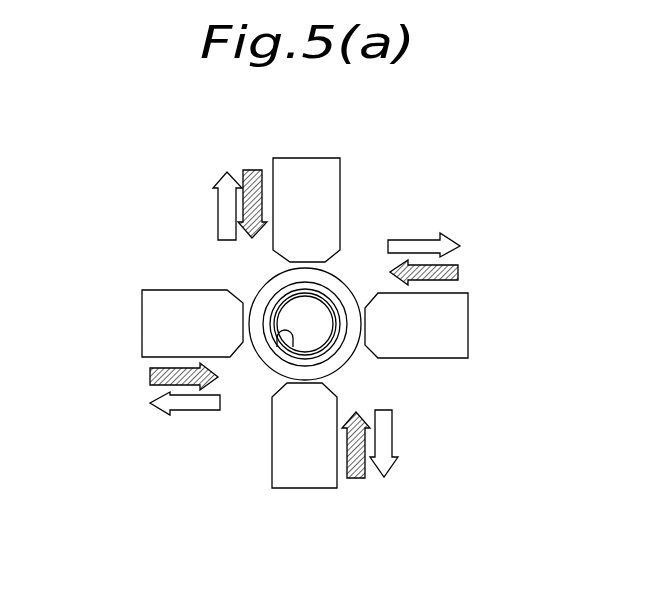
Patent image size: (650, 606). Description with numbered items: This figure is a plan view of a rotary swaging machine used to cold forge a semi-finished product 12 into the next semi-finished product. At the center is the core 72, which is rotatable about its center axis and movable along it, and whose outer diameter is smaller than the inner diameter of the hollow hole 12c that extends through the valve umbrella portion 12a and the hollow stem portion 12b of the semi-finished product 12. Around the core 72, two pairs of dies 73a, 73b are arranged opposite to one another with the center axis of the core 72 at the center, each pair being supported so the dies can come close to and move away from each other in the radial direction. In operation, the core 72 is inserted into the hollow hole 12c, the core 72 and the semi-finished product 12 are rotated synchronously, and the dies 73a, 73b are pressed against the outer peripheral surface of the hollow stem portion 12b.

The die 73b is at (311, 158).
The die 73a is at (142, 325).
The core 72 is at (342, 281).
The semi-finished product 12 is at (240, 277).
The valve umbrella portion 12a is at (330, 298).
The hollow stem portion 12b is at (338, 350).
The hollow hole 12c is at (285, 350).